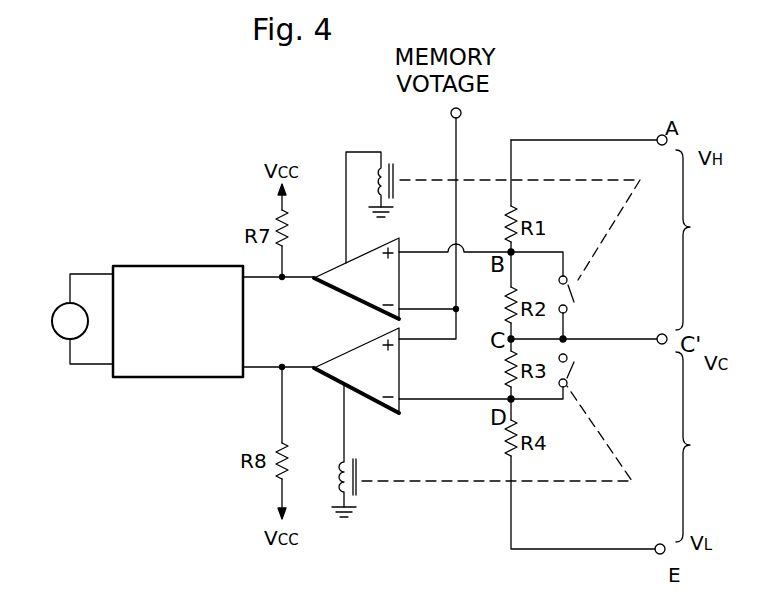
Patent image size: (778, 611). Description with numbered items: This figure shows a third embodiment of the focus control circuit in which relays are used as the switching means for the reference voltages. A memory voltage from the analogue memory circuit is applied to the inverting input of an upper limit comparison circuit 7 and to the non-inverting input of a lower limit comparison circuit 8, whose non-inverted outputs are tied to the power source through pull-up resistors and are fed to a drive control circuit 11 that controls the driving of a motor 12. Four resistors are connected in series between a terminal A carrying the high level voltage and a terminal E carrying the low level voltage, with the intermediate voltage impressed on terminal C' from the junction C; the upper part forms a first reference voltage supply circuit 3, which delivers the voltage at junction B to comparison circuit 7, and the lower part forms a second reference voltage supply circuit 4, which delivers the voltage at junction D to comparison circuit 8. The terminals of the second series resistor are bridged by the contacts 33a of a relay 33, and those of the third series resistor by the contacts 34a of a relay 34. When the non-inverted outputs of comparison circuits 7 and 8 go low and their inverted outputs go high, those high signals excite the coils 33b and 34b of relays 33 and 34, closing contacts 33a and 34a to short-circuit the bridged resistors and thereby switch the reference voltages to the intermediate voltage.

The first reference voltage supply circuit 3 is at (691, 240).
The second reference voltage supply circuit 4 is at (691, 447).
The upper limit comparison circuit 7 is at (341, 298).
The lower limit comparison circuit 8 is at (337, 389).
The drive control circuit 11 is at (181, 378).
The motor 12 is at (58, 336).
The relay 33 is at (484, 157).
The contacts of relay 33 33a is at (575, 292).
The coil of relay 33 33b is at (395, 172).
The relay 34 is at (440, 488).
The contacts of relay 34 34a is at (571, 367).
The coil of relay 34 34b is at (360, 492).